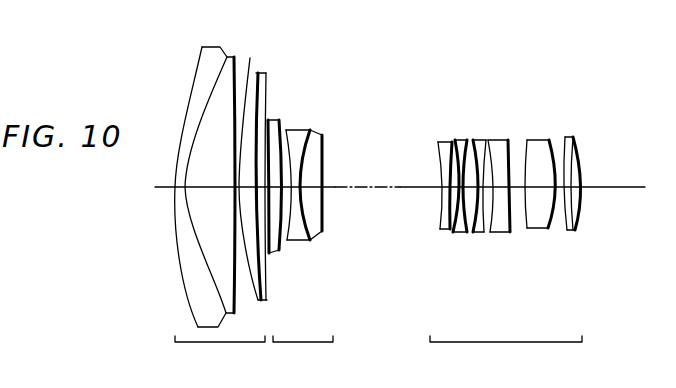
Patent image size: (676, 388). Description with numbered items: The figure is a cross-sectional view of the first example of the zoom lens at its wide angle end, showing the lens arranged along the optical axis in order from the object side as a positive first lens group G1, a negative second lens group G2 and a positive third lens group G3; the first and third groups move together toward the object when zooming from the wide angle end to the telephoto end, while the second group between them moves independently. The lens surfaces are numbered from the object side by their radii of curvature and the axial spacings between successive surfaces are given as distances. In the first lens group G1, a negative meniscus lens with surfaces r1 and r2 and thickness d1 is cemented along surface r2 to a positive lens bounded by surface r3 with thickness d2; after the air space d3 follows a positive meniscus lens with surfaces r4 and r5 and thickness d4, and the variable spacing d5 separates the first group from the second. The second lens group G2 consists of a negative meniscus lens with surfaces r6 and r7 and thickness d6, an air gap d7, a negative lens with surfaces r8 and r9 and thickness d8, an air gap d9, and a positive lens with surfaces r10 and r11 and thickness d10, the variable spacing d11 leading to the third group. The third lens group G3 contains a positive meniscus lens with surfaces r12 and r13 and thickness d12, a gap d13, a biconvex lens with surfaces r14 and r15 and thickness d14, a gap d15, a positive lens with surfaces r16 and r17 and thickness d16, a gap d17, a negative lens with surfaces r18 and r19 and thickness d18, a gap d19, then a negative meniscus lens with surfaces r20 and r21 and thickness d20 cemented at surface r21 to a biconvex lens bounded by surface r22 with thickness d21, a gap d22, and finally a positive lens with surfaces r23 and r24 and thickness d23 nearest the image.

The first lens group G1 is at (220, 354).
The second lens group G2 is at (303, 354).
The third lens group G3 is at (506, 354).
The radius of curvature r1 is at (197, 70).
The radius of curvature r2 is at (222, 64).
The radius of curvature r3 is at (234, 66).
The radius of curvature r4 is at (250, 60).
The radius of curvature r5 is at (260, 73).
The radius of curvature r6 is at (268, 120).
The radius of curvature r7 is at (280, 121).
The radius of curvature r8 is at (287, 130).
The radius of curvature r9 is at (305, 131).
The radius of curvature r10 is at (311, 131).
The radius of curvature r11 is at (323, 143).
The radius of curvature r12 is at (439, 145).
The radius of curvature r13 is at (441, 141).
The radius of curvature r14 is at (454, 139).
The radius of curvature r15 is at (467, 139).
The radius of curvature r16 is at (474, 139).
The radius of curvature r17 is at (486, 139).
The radius of curvature r18 is at (489, 139).
The radius of curvature r19 is at (508, 139).
The radius of curvature r20 is at (528, 139).
The radius of curvature r21 is at (549, 139).
The radius of curvature r22 is at (566, 136).
The radius of curvature r23 is at (574, 140).
The radius of curvature r24 is at (581, 167).
The lens surface distance d1 is at (180, 189).
The lens surface distance d2 is at (203, 188).
The lens surface distance d3 is at (234, 188).
The lens surface distance d4 is at (238, 234).
The lens surface distance d5 is at (243, 237).
The lens surface distance d6 is at (268, 252).
The lens surface distance d7 is at (290, 243).
The lens surface distance d8 is at (311, 243).
The lens surface distance d9 is at (323, 231).
The lens surface distance d10 is at (323, 203).
The lens surface distance d11 is at (381, 190).
The lens surface distance d12 is at (444, 196).
The lens surface distance d13 is at (442, 215).
The lens surface distance d14 is at (456, 234).
The lens surface distance d15 is at (469, 236).
The lens surface distance d16 is at (477, 233).
The lens surface distance d17 is at (488, 235).
The lens surface distance d18 is at (500, 235).
The lens surface distance d19 is at (513, 214).
The lens surface distance d20 is at (542, 230).
The lens surface distance d21 is at (555, 228).
The lens surface distance d22 is at (575, 228).
The lens surface distance d23 is at (582, 205).